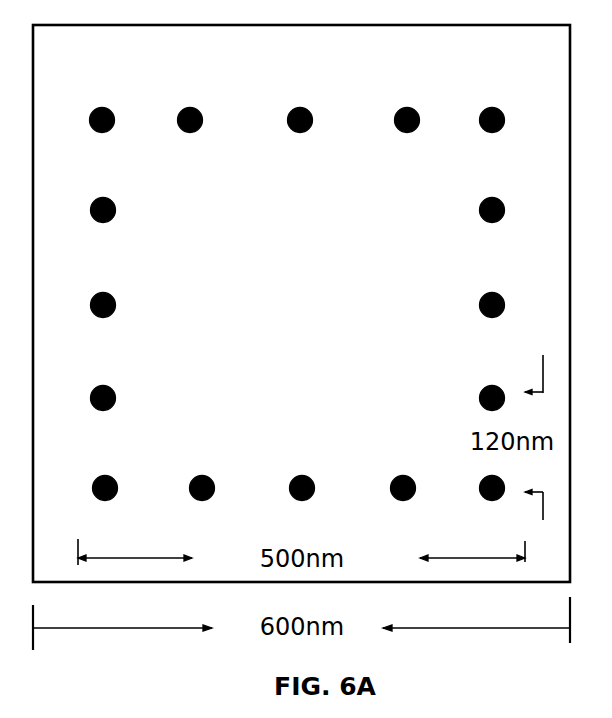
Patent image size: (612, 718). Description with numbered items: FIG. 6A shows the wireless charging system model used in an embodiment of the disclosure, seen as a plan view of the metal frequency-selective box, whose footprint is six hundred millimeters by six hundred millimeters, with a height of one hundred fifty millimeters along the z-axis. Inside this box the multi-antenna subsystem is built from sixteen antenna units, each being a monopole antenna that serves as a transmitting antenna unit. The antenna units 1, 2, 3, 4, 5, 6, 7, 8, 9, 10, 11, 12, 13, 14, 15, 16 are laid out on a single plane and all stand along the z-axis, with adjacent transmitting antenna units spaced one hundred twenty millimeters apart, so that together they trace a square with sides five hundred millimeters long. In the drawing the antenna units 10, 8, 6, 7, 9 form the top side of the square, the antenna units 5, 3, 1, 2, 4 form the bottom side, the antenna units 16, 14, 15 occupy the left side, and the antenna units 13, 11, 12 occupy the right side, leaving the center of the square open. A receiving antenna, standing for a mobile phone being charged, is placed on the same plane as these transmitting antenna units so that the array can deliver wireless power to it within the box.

The antenna unit 1 is at (302, 507).
The antenna unit 2 is at (403, 507).
The antenna unit 3 is at (202, 507).
The antenna unit 4 is at (492, 507).
The antenna unit 5 is at (105, 507).
The antenna unit 6 is at (300, 101).
The antenna unit 7 is at (407, 101).
The antenna unit 8 is at (190, 101).
The antenna unit 9 is at (492, 101).
The antenna unit 10 is at (101, 101).
The antenna unit 11 is at (471, 308).
The antenna unit 12 is at (471, 401).
The antenna unit 13 is at (471, 213).
The antenna unit 14 is at (81, 308).
The antenna unit 15 is at (81, 401).
The antenna unit 16 is at (81, 213).